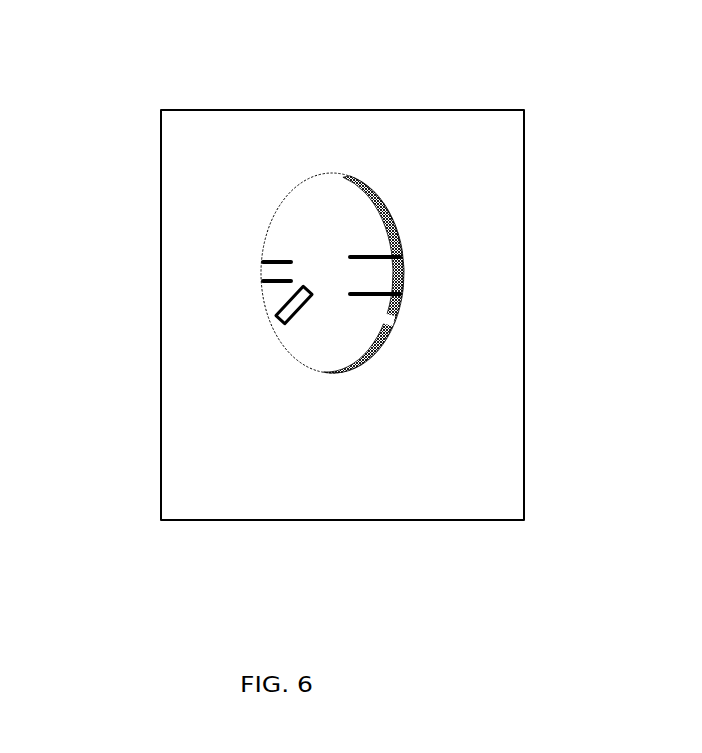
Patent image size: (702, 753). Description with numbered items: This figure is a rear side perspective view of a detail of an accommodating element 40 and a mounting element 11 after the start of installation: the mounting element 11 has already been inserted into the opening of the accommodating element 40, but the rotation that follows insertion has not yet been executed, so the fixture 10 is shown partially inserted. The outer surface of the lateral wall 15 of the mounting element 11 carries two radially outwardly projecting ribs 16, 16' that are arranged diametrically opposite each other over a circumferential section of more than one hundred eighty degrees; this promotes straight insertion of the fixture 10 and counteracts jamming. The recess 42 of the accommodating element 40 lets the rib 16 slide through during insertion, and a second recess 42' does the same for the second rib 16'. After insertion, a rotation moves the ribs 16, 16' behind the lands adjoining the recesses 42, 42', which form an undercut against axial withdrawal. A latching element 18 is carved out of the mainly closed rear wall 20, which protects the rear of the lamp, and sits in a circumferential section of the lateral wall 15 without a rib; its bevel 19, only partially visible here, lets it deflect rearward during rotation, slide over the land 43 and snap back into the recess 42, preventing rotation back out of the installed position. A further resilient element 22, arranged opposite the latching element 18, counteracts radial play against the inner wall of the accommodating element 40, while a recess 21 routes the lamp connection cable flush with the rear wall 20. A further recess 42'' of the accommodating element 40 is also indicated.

The fixture 10 is at (332, 201).
The mounting element 11 is at (302, 196).
The lateral wall 15 is at (378, 225).
The rib 16 is at (388, 199).
The second rib 16' is at (266, 495).
The latching element 18 is at (363, 282).
The bevel 19 is at (402, 272).
The rear wall 20 is at (333, 340).
The recess 21 is at (268, 375).
The resilient element 22 is at (265, 272).
The accommodating element 40 is at (224, 150).
The recess 42 is at (500, 135).
The second recess 42' is at (342, 498).
The right edge region 42'' is at (539, 340).
The land 43 is at (394, 236).